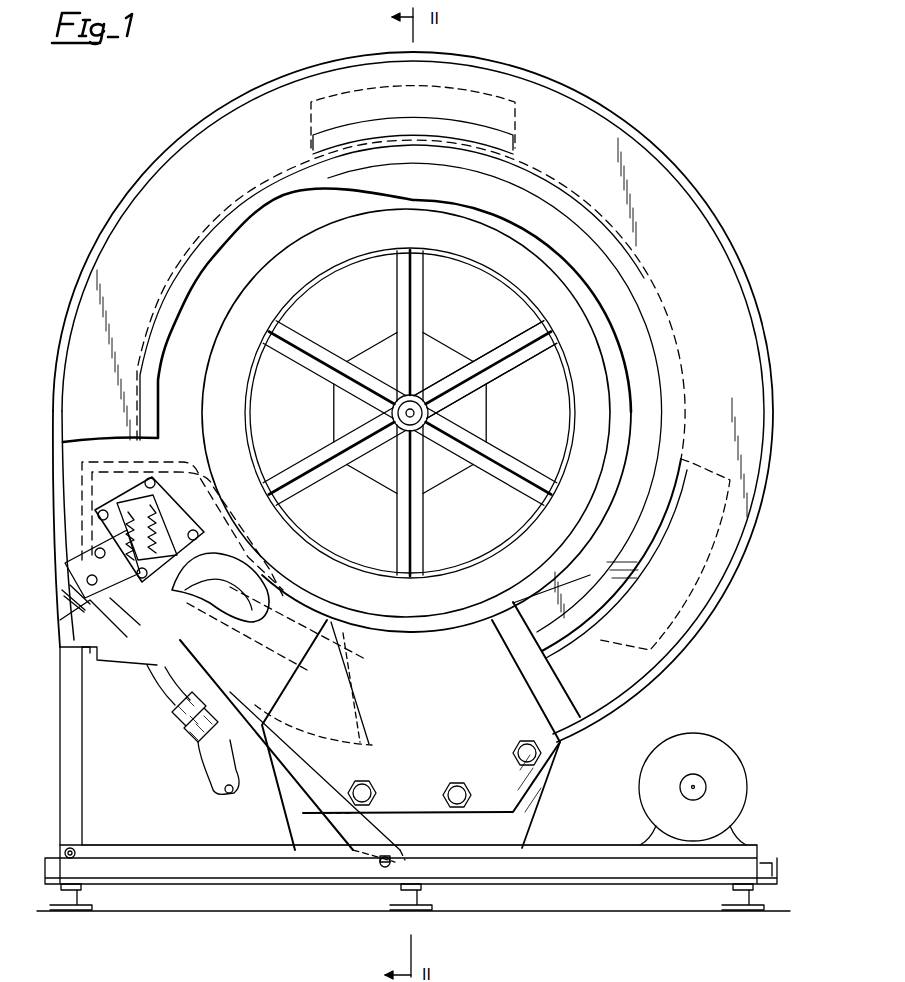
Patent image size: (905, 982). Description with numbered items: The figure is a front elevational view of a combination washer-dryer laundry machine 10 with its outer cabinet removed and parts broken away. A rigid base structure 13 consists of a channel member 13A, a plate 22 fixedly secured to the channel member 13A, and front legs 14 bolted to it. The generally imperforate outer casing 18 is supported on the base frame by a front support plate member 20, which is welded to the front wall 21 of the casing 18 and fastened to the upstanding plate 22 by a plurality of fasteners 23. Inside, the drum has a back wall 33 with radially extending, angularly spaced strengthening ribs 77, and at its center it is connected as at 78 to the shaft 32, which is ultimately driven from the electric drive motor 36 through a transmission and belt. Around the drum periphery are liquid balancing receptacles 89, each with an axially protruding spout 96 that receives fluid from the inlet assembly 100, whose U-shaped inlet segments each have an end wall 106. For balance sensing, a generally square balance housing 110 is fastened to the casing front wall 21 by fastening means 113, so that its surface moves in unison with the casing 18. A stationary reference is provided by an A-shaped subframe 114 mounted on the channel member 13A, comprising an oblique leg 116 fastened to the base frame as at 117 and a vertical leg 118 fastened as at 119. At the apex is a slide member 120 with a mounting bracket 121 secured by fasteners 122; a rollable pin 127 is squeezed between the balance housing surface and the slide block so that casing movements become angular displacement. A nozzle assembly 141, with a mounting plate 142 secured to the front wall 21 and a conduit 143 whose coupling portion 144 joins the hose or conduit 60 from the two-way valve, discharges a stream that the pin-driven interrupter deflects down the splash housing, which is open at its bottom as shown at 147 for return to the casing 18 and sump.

The laundry machine 10 is at (640, 106).
The outer casing 18 is at (670, 165).
The inlet assembly 100 is at (563, 180).
The liquid balancing receptacle 89 is at (340, 94).
The spout 96 is at (440, 124).
The end wall 106 is at (182, 300).
The back wall 33 is at (556, 441).
The strengthening ribs 77 is at (496, 455).
The shaft 32 is at (414, 409).
The drum connection 78 is at (422, 432).
The balance housing 110 is at (92, 509).
The fastening means 113 is at (104, 510).
The rollable pin 127 is at (133, 505).
The slide member 120 is at (78, 560).
The mounting bracket 121 is at (68, 566).
The fasteners 122 is at (63, 603).
The mounting plate 142 is at (232, 618).
The nozzle assembly 141 is at (250, 626).
The conduit 143 is at (152, 680).
The coupling portion 144 is at (190, 728).
The conduit 60 is at (220, 782).
The subframe 114 is at (60, 736).
The vertical leg 118 is at (84, 790).
The fastening point 119 is at (74, 850).
The base structure 13 is at (190, 862).
The channel member 13A is at (228, 857).
The front legs 14 is at (72, 905).
The oblique leg 116 is at (295, 780).
The fastening point 117 is at (382, 866).
The front support plate member 20 is at (558, 745).
The open bottom 147 is at (353, 718).
The fasteners 23 is at (513, 753).
The front wall 21 is at (578, 720).
The plate 22 is at (528, 838).
The electric drive motor 36 is at (698, 745).